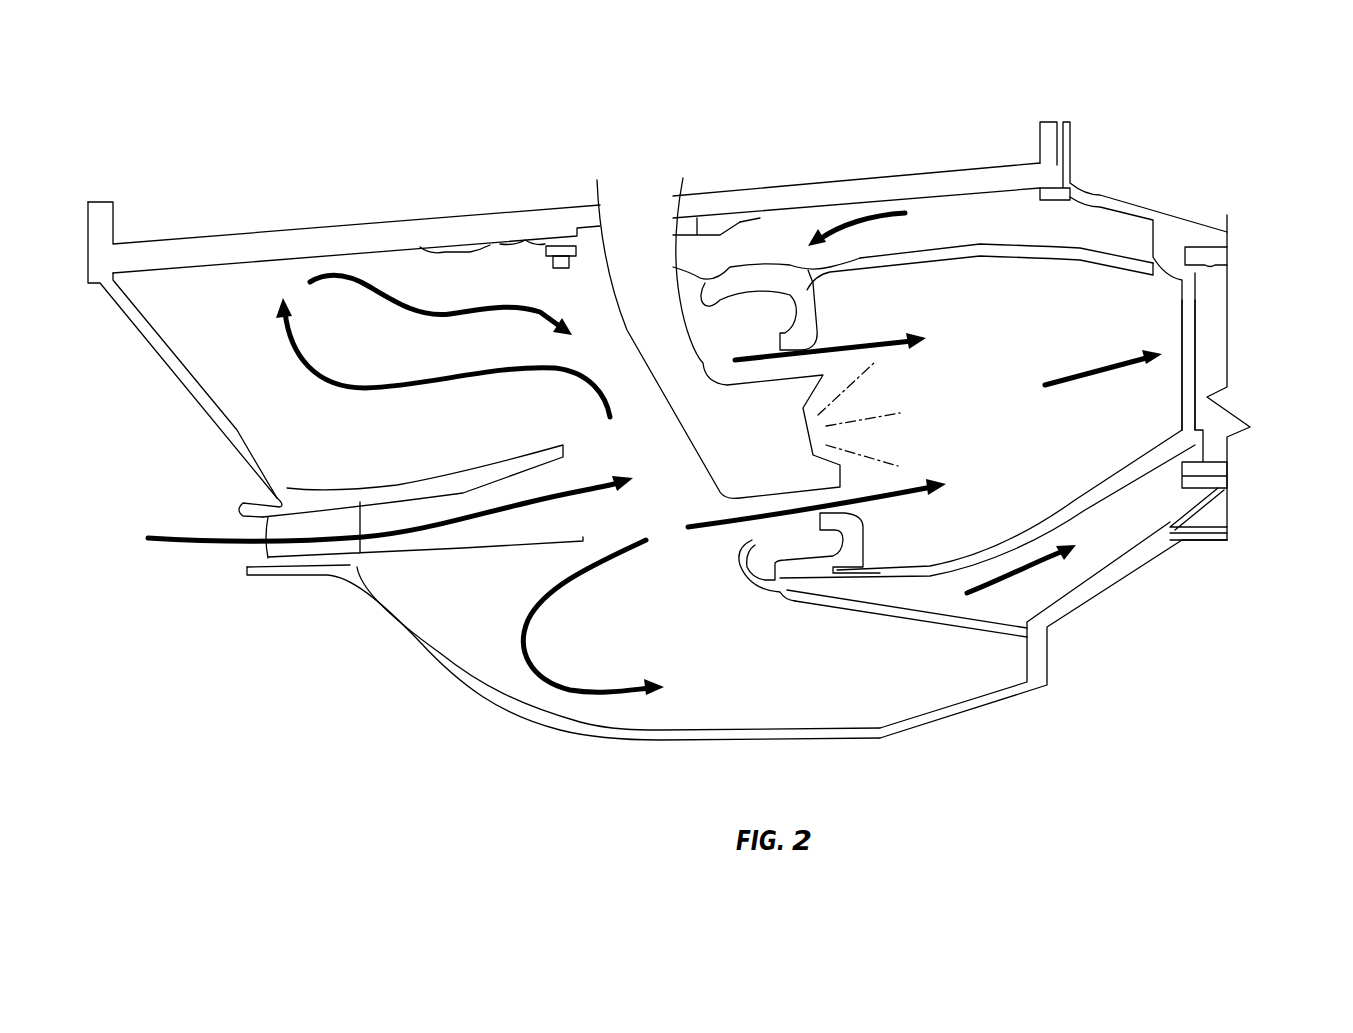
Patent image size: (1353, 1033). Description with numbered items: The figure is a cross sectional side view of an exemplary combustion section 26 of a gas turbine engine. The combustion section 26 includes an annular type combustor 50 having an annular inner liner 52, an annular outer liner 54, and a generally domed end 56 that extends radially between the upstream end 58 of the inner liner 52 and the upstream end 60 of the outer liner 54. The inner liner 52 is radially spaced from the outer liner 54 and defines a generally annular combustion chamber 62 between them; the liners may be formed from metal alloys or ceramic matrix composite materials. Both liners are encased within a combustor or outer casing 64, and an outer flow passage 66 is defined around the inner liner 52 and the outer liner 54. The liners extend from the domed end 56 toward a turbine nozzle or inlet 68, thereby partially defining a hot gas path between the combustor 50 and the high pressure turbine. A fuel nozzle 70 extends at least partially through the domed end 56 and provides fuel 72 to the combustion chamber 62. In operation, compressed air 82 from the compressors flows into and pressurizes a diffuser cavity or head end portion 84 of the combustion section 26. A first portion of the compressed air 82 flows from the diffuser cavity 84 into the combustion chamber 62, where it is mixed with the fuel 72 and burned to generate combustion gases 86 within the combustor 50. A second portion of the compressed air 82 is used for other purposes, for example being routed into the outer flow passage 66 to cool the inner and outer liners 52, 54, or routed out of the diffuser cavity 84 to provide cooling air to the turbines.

The combustion section 26 is at (845, 100).
The combustor 50 is at (930, 231).
The inner liner 52 is at (1020, 537).
The outer liner 54 is at (880, 263).
The domed end 56 is at (738, 563).
The upstream end of the inner liner 58 is at (817, 585).
The upstream end of the outer liner 60 is at (755, 258).
The combustion chamber 62 is at (993, 373).
The outer casing 64 is at (1003, 159).
The outer flow passage 66 is at (1070, 223).
The turbine nozzle or inlet 68 is at (1210, 336).
The fuel nozzle 70 is at (718, 338).
The fuel 72 is at (875, 420).
The compressed air 82 is at (177, 541).
The diffuser cavity 84 is at (445, 290).
The combustion gases 86 is at (1097, 378).